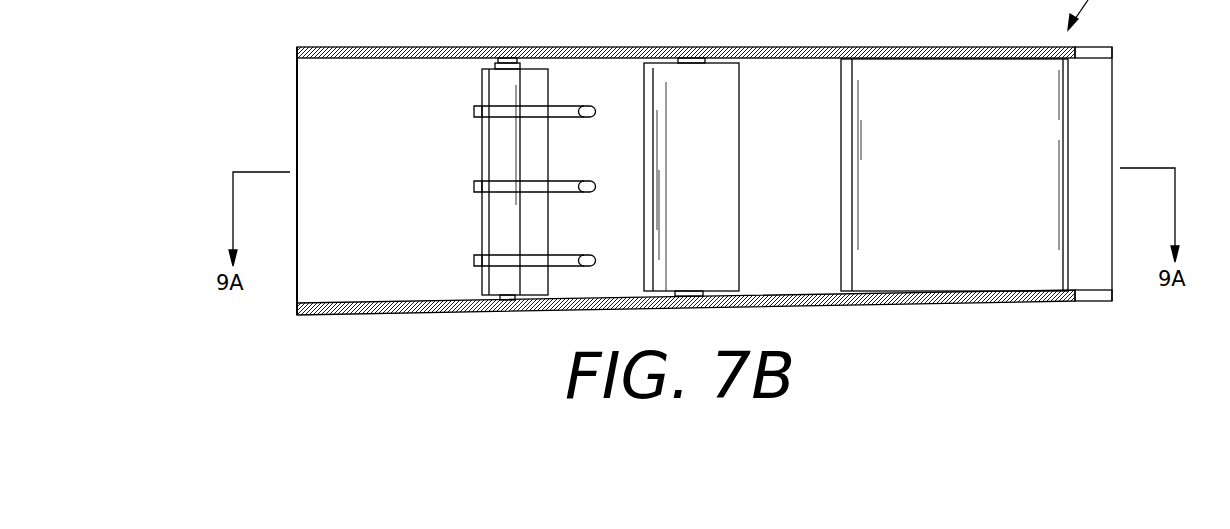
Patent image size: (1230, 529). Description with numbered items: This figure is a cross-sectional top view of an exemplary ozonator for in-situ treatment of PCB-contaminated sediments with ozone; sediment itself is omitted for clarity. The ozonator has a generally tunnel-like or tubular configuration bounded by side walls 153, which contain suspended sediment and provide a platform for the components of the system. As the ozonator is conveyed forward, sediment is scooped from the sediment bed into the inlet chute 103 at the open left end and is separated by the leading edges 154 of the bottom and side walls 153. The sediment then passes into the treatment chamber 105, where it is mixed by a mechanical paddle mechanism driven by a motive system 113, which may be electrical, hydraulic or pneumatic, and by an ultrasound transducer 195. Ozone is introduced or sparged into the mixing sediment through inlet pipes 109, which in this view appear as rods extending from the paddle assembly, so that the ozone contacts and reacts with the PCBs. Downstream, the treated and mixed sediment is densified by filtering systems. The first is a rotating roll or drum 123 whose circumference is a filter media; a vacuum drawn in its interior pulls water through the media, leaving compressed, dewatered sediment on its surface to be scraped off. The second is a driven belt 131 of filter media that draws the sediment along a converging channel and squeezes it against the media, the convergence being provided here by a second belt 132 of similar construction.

The inlet chute 103 is at (662, 185).
The treatment chamber 105 is at (563, 95).
The inlet pipes 109 is at (529, 154).
The motive system 113 is at (496, 65).
The rotating roll or drum 123 is at (692, 268).
The driven belt 131 is at (943, 171).
The second belt 132 is at (1010, 75).
The side walls 153 is at (930, 47).
The leading edges 154 is at (297, 52).
The ultrasound transducer 195 is at (578, 106).